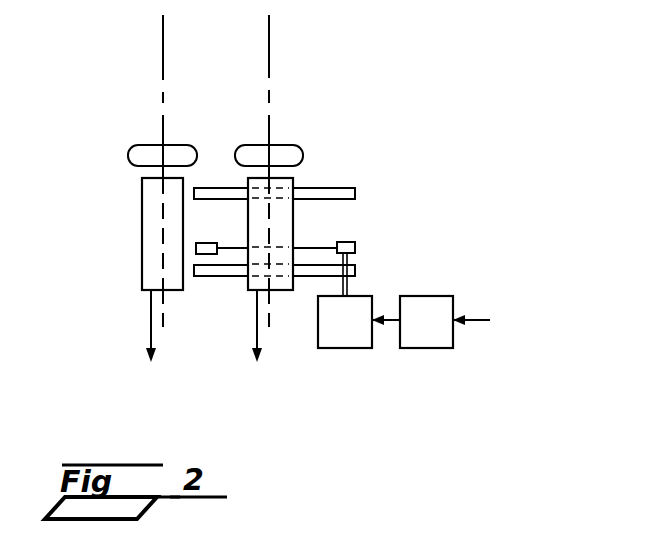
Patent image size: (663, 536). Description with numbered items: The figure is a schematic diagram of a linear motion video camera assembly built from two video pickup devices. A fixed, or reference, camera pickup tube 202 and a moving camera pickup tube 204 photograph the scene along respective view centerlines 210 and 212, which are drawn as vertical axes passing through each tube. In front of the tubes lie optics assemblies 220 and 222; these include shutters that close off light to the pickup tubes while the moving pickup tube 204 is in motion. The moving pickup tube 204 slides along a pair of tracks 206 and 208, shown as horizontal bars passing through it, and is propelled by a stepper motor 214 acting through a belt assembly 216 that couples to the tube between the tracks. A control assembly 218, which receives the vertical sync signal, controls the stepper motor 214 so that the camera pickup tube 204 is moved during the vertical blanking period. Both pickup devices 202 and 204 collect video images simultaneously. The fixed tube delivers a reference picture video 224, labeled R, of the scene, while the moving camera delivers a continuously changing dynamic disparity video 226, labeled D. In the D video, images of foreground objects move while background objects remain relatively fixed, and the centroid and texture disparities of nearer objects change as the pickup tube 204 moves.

The fixed camera pickup tube 202 is at (142, 220).
The moving camera pickup tube 204 is at (295, 213).
The track 206 is at (338, 188).
The track 208 is at (355, 270).
The view centerline 210 is at (163, 62).
The view centerline 212 is at (269, 50).
The stepper motor 214 is at (347, 348).
The belt assembly 216 is at (348, 242).
The control assembly 218 is at (418, 348).
The optics assembly 220 is at (128, 150).
The optics assembly 222 is at (303, 147).
The reference picture video 224 is at (148, 315).
The dynamic disparity video 226 is at (255, 318).